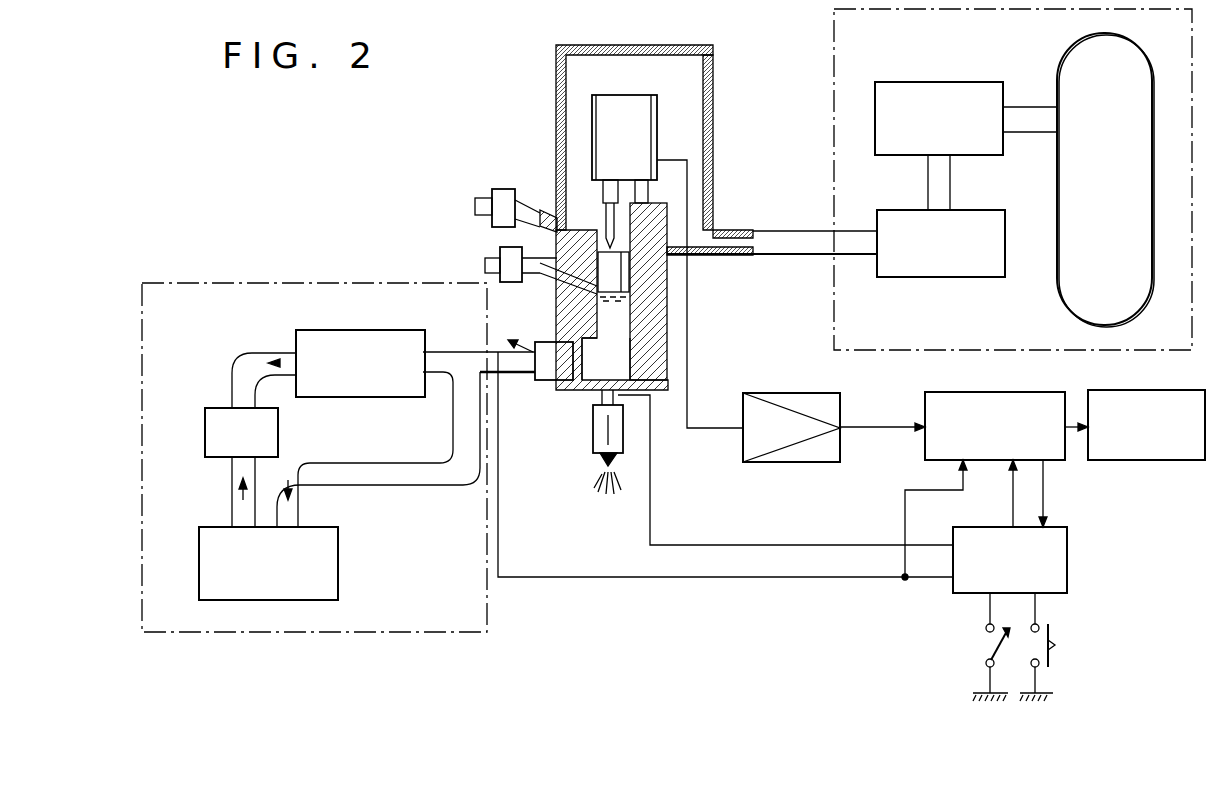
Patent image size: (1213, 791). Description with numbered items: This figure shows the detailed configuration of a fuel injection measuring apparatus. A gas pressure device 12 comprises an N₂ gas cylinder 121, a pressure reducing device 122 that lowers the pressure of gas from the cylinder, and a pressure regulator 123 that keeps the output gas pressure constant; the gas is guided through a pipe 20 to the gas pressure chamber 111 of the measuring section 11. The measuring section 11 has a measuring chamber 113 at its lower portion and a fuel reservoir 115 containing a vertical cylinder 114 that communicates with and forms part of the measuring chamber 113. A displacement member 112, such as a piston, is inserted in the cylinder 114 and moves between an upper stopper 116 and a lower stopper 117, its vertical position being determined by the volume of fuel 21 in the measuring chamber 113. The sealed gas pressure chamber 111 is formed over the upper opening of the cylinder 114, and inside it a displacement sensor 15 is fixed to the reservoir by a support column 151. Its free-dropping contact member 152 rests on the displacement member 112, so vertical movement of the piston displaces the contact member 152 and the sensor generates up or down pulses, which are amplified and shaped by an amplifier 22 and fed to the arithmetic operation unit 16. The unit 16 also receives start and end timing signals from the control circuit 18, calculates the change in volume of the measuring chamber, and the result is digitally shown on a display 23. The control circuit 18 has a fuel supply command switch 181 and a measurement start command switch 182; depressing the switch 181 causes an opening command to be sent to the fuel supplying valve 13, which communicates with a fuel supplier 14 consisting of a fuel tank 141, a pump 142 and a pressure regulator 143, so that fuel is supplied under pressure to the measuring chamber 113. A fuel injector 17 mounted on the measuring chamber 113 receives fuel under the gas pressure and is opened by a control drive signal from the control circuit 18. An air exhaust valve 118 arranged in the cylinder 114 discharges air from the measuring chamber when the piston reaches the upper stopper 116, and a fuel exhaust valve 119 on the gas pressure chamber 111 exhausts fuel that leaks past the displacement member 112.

The measuring section 11 is at (624, 36).
The gas pressure device 12 is at (826, 40).
The fuel supplying valve 13 is at (547, 382).
The fuel supplier 14 is at (222, 282).
The displacement sensor 15 is at (650, 96).
The arithmetic operation unit 16 is at (1002, 392).
The fuel injector 17 is at (593, 453).
The control circuit 18 is at (1068, 535).
The pipe 20 is at (796, 230).
The fuel 21 is at (583, 385).
The amplifier 22 is at (796, 392).
The display 23 is at (1150, 390).
The gas pressure chamber 111 is at (708, 96).
The displacement member 112 is at (650, 287).
The measuring chamber 113 is at (640, 368).
The cylinder 114 is at (645, 312).
The fuel reservoir 115 is at (550, 303).
The upper stopper 116 is at (546, 213).
The lower stopper 117 is at (645, 342).
The air exhaust valve 118 is at (485, 265).
The fuel exhaust valve 119 is at (475, 207).
The N₂ gas cylinder 121 is at (1066, 64).
The pressure reducing device 122 is at (905, 82).
The pressure regulator 123 is at (936, 278).
The fuel tank 141 is at (340, 545).
The pump 142 is at (210, 407).
The pressure regulator 143 is at (352, 330).
The support column 151 is at (660, 187).
The contact member 152 is at (561, 220).
The fuel supply command switch 181 is at (978, 643).
The measurement start command switch 182 is at (1066, 642).